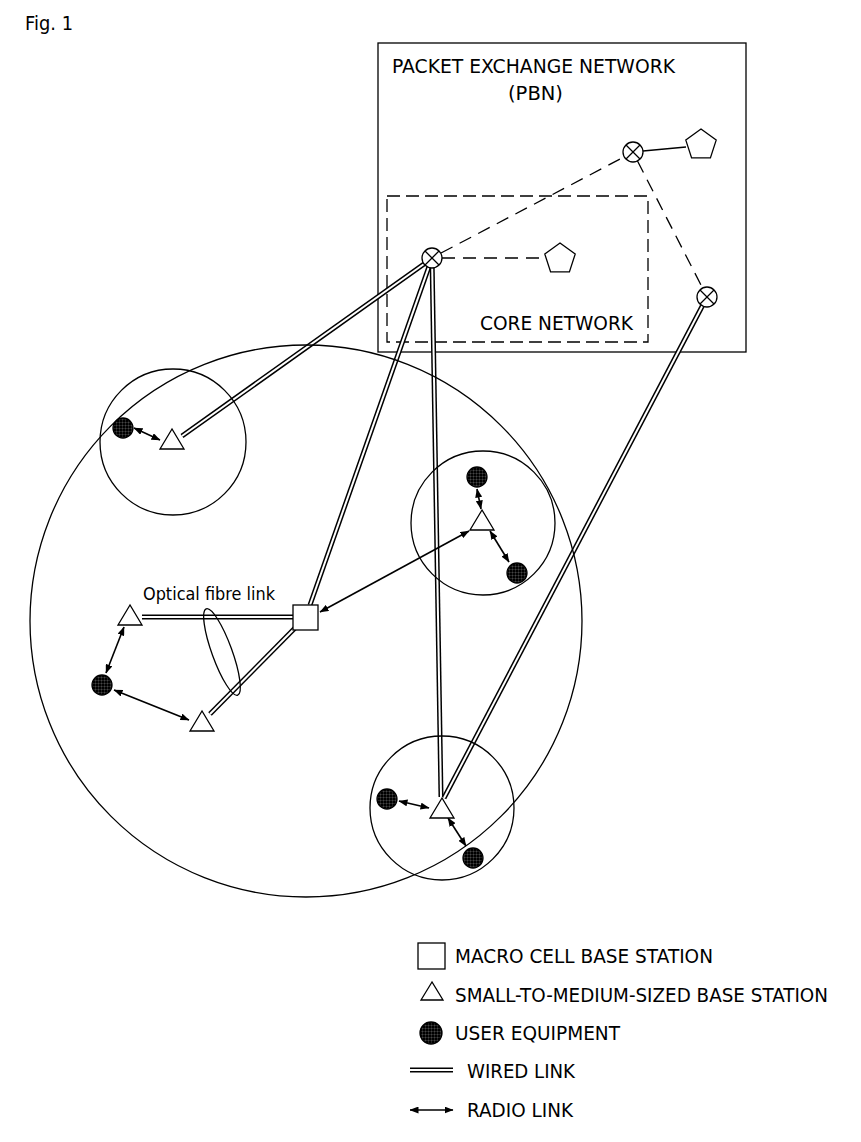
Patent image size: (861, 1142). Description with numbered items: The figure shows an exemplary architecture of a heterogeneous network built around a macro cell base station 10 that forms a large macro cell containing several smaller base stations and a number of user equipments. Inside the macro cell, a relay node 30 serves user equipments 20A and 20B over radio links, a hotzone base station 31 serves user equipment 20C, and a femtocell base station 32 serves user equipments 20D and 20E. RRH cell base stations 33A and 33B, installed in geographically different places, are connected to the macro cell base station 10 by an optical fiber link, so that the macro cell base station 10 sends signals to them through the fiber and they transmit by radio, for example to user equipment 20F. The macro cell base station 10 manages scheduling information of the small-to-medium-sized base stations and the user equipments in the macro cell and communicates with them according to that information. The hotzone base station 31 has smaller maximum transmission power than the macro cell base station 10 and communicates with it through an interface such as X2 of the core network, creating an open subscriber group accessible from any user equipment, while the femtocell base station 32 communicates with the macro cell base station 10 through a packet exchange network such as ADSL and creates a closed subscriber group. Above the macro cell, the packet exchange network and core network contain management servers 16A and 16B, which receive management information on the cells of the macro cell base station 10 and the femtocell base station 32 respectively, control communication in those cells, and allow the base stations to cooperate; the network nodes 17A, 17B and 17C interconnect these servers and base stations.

The macro cell base station 10 is at (319, 626).
The management server 16A is at (568, 244).
The management server 16B is at (700, 158).
The core network router 17A is at (436, 249).
The packet exchange network router 17B is at (637, 143).
The packet exchange network router 17C is at (711, 288).
The user equipment 20A is at (472, 466).
The user equipment 20B is at (512, 585).
The user equipment 20C is at (132, 423).
The user equipment 20D is at (376, 795).
The user equipment 20E is at (484, 857).
The user equipment 20F is at (102, 697).
The relay node 30 is at (491, 521).
The hotzone base station 31 is at (175, 450).
The femtocell base station 32 is at (456, 808).
The RRH cell base station 33A is at (118, 613).
The RRH cell base station 33B is at (202, 732).
The X2 interface X2 is at (424, 532).